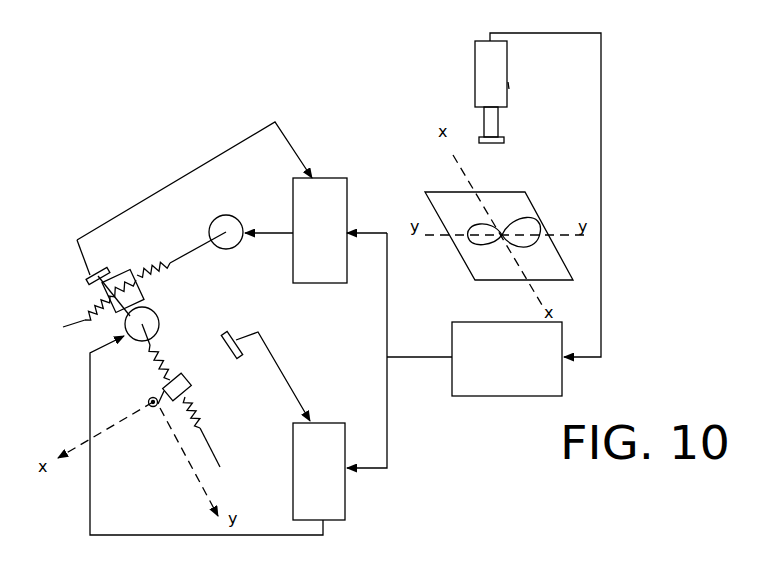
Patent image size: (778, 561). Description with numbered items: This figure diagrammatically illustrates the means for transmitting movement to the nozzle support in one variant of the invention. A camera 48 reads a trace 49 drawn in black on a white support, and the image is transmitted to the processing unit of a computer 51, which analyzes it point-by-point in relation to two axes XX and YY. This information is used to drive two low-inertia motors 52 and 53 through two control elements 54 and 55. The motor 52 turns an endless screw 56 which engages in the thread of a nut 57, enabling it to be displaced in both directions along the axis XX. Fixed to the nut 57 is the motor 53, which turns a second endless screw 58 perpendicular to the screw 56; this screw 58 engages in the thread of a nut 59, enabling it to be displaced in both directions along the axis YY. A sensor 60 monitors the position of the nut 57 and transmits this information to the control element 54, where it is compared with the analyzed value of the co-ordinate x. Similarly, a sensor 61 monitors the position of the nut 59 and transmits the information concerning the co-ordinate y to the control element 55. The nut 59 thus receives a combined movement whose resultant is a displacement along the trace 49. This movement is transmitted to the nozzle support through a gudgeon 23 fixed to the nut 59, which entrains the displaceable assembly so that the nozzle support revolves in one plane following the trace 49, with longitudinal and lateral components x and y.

The camera 48 is at (488, 79).
The trace 49 is at (468, 245).
The computer 51 is at (490, 396).
The low-inertia motor 52 is at (234, 220).
The low-inertia motor 53 is at (140, 342).
The control element 54 is at (348, 160).
The control element 55 is at (345, 490).
The endless screw 56 is at (84, 325).
The nut 57 is at (125, 272).
The endless screw 58 is at (142, 385).
The nut 59 is at (192, 388).
The sensor 60 is at (118, 252).
The sensor 61 is at (247, 313).
The gudgeon 23 is at (155, 408).